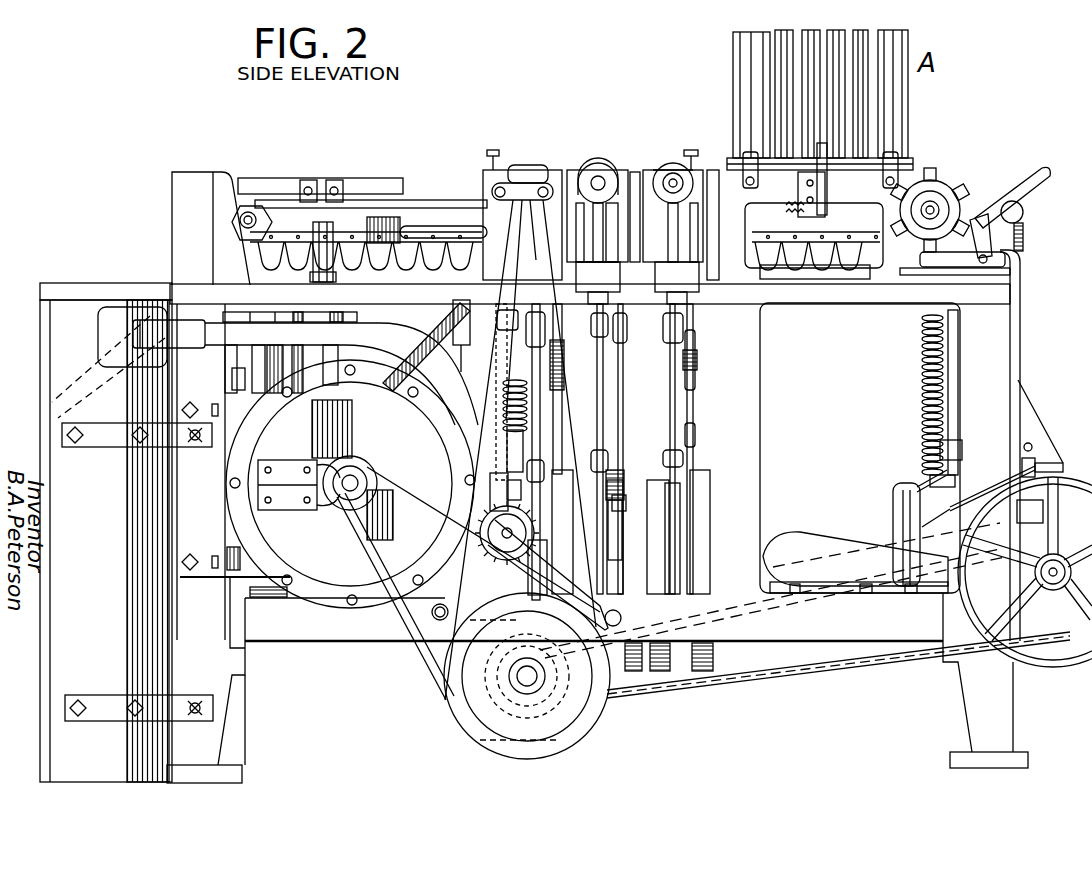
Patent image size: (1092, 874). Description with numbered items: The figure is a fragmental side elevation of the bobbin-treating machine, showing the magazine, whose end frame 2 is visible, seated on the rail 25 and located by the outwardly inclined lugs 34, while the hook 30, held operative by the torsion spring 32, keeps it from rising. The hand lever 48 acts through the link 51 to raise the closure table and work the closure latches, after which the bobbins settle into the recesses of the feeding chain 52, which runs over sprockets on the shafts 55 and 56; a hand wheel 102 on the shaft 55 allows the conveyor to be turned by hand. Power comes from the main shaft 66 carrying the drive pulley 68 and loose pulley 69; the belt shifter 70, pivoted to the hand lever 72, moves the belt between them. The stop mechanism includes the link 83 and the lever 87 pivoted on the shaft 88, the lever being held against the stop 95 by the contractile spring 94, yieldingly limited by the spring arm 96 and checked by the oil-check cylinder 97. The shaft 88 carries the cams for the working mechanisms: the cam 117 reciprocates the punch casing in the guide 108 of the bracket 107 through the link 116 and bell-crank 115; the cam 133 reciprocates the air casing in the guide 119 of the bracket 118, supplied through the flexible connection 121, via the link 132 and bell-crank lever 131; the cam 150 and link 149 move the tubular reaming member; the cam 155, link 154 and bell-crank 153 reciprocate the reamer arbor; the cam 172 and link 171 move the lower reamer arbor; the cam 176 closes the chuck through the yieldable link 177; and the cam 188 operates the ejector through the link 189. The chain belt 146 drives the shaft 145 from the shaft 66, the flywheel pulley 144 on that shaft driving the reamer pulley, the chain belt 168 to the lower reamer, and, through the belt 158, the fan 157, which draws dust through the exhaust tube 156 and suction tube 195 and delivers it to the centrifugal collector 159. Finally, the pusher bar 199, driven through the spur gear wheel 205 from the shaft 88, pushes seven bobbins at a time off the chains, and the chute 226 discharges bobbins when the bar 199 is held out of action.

The end frame 2 is at (772, 160).
The rail 25 is at (855, 210).
The hook 30 is at (828, 176).
The torsion spring 32 is at (800, 200).
The outwardly inclined lug 34 is at (750, 158).
The hand lever 48 is at (1011, 215).
The link 51 is at (945, 267).
The bobbin-feeding chain 52 is at (815, 275).
The shaft 55 is at (940, 212).
The shaft 56 is at (252, 210).
The main shaft 66 is at (1053, 584).
The drive pulley 68 is at (970, 624).
The loose pulley 69 is at (1000, 598).
The belt shifter 70 is at (1030, 455).
The hand lever 72 is at (1050, 460).
The link 83 is at (1020, 322).
The lever 87 is at (893, 492).
The shaft 88 is at (795, 560).
The contractile spring 94 is at (920, 378).
The stop 95 is at (915, 482).
The spring arm 96 is at (920, 593).
The oil-check cylinder 97 is at (950, 385).
The hand wheel 102 is at (938, 200).
The bracket 107 is at (673, 227).
The guide 108 is at (668, 170).
The bell-crank 115 is at (697, 232).
The link 116 is at (655, 362).
The cam 117 is at (634, 466).
The bracket 118 is at (585, 232).
The guide 119 is at (600, 165).
The flexible connection 121 is at (590, 175).
The bell-crank lever 131 is at (618, 232).
The link 132 is at (548, 390).
The cam 133 is at (578, 468).
The pulley 144 is at (478, 732).
The shaft 145 is at (525, 680).
The chain belt 146 is at (780, 678).
The link 149 is at (453, 353).
The cam 150 is at (445, 588).
The bell-crank 153 is at (520, 240).
The link 154 is at (545, 420).
The cam 155 is at (525, 548).
The exhaust tube 156 is at (435, 325).
The fan 157 is at (362, 450).
The belt 158 is at (425, 660).
The centrifugal collector 159 is at (70, 478).
The chain belt 168 is at (555, 358).
The link 171 is at (633, 449).
The cam 172 is at (635, 507).
The cam 176 is at (495, 490).
The link 177 is at (372, 482).
The cam 188 is at (700, 495).
The link 189 is at (695, 375).
The suction tube 195 is at (505, 355).
The bar 199 is at (356, 178).
The spur gear wheel 205 is at (300, 345).
The chute 226 is at (50, 358).